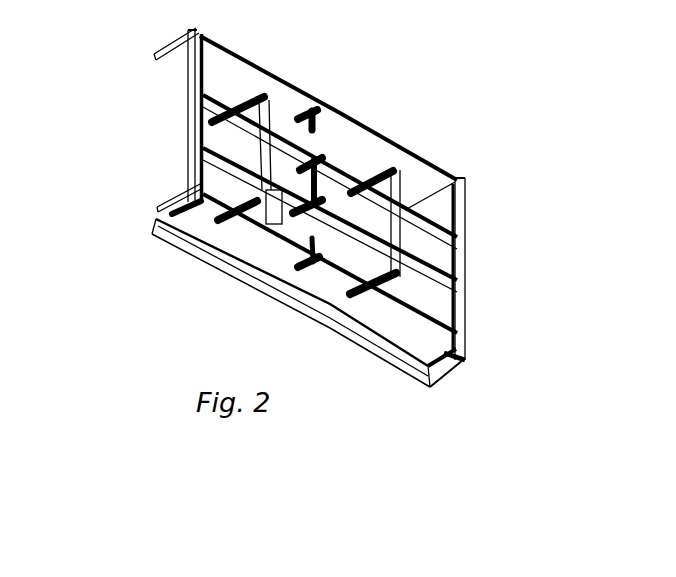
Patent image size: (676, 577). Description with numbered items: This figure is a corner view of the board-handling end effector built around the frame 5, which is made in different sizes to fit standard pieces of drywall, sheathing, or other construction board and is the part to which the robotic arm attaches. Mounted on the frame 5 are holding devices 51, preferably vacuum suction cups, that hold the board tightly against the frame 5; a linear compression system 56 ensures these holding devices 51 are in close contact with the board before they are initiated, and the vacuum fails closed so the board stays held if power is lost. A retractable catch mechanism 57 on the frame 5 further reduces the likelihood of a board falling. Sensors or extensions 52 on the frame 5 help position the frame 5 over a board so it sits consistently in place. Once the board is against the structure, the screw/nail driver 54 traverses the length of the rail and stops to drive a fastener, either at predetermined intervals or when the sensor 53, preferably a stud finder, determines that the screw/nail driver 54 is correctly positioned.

The frame 5 is at (476, 312).
The holding device 51 is at (190, 108).
The sensors or extensions 52 is at (153, 60).
The stud sensor 53 is at (247, 63).
The screw/nail driver 54 is at (318, 108).
The linear compression system 56 is at (388, 163).
The retractable catch mechanism 57 is at (157, 233).